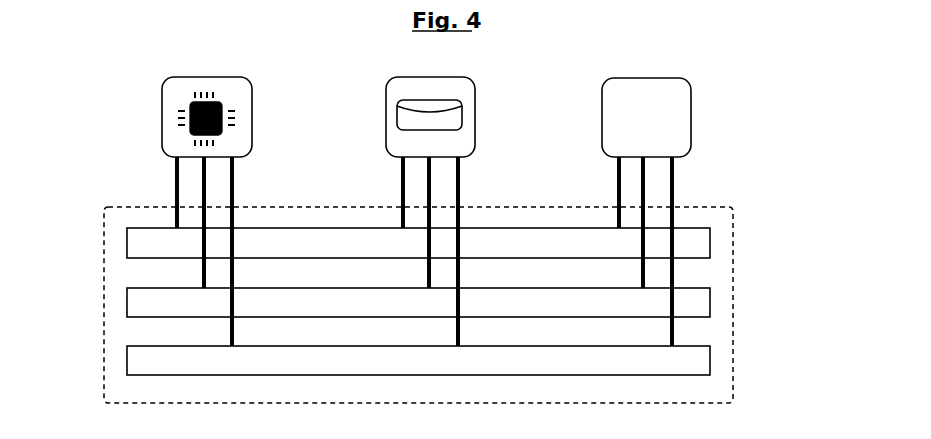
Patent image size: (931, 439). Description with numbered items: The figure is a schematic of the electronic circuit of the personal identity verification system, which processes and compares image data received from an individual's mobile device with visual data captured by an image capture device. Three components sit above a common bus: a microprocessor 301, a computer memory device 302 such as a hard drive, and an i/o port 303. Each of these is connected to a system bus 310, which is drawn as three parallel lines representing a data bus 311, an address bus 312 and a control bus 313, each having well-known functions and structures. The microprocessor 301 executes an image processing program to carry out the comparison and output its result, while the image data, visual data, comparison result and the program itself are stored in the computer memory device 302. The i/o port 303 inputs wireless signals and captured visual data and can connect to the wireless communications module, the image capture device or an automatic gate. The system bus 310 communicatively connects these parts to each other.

The microprocessor 301 is at (163, 120).
The computer memory device 302 is at (387, 120).
The i/o port 303 is at (602, 117).
The system bus 310 is at (733, 295).
The data bus 311 is at (127, 247).
The address bus 312 is at (127, 305).
The control bus 313 is at (127, 365).